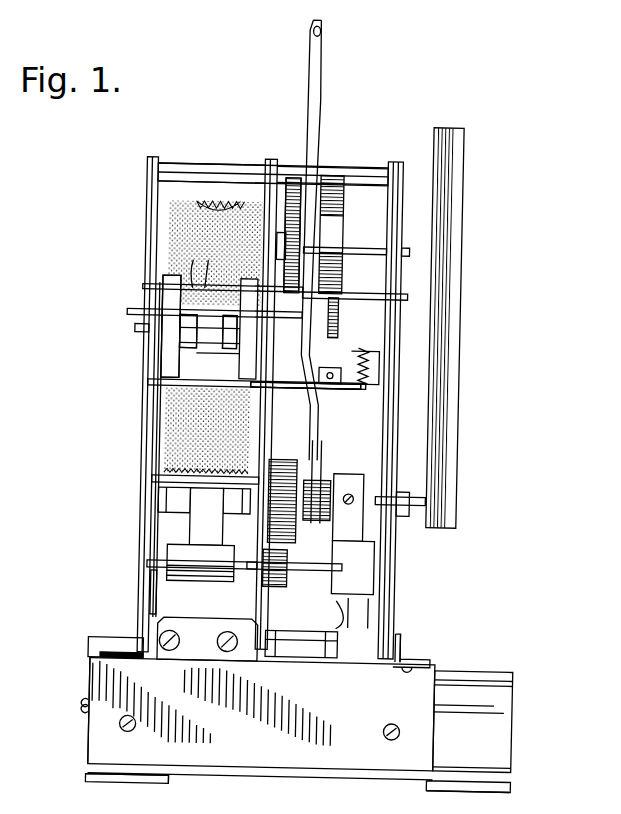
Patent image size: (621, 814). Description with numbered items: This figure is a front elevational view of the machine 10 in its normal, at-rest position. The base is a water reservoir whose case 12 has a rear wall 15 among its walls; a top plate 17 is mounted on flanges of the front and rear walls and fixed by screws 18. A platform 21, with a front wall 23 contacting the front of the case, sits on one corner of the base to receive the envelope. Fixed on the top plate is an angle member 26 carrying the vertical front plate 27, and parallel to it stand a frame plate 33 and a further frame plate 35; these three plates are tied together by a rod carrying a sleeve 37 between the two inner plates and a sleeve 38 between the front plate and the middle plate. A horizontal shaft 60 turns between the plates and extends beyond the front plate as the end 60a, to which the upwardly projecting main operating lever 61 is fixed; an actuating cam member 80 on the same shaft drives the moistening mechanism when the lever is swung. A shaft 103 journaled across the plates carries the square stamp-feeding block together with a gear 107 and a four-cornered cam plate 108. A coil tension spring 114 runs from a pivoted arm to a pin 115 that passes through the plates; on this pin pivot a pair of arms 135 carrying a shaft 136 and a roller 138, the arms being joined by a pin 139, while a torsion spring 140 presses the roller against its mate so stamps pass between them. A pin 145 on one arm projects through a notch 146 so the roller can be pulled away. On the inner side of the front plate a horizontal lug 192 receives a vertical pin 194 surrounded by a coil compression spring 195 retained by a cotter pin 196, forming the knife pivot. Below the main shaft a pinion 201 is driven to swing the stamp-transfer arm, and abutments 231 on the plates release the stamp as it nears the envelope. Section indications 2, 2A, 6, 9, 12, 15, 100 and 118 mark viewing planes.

The section line 2- 2 is at (165, 115).
The base plate edge 2A is at (85, 748).
The section line 6- 6 is at (392, 97).
The section line 9- 9 is at (195, 598).
The machine 10 is at (492, 298).
The case 12 is at (205, 392).
The rear wall 15 is at (140, 383).
The top plate 17 is at (488, 680).
The screws 18 is at (160, 778).
The platform 21 is at (80, 731).
The front wall 23 is at (352, 740).
The angle member 26 is at (412, 640).
The front plate 27 is at (385, 578).
The frame plate 33 is at (270, 160).
The frame plate 35 is at (150, 210).
The sleeve 37 is at (207, 170).
The sleeve 38 is at (366, 175).
The horizontal shaft 60 is at (362, 515).
The extending end of shaft 60a is at (425, 500).
The main operating lever 61 is at (455, 394).
The actuating cam member 80 is at (368, 472).
The base bottom plate 100 is at (474, 788).
The shaft 103 is at (360, 247).
The gear 107 is at (292, 175).
The cam plate 108 is at (332, 175).
The coil tension spring 114 is at (338, 320).
The pin 115 is at (140, 290).
The section line 118- 118 is at (198, 260).
The arms 135 is at (170, 338).
The shaft 136 is at (240, 360).
The roller 138 is at (178, 353).
The pin 139 is at (190, 275).
The torsion spring 140 is at (206, 262).
The pin 145 is at (127, 315).
The notch 146 is at (163, 290).
The horizontal lug 192 is at (380, 386).
The vertical pin 194 is at (362, 352).
The coil compression spring 195 is at (357, 355).
The cotter pin 196 is at (370, 356).
The pinion 201 is at (270, 588).
The abutments 231 is at (150, 583).